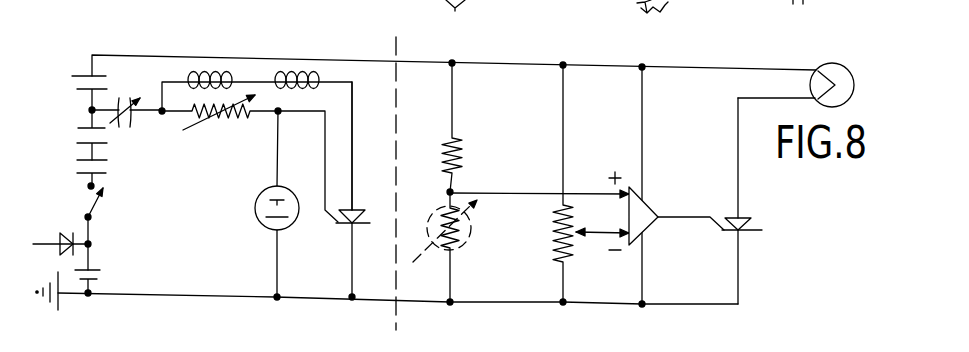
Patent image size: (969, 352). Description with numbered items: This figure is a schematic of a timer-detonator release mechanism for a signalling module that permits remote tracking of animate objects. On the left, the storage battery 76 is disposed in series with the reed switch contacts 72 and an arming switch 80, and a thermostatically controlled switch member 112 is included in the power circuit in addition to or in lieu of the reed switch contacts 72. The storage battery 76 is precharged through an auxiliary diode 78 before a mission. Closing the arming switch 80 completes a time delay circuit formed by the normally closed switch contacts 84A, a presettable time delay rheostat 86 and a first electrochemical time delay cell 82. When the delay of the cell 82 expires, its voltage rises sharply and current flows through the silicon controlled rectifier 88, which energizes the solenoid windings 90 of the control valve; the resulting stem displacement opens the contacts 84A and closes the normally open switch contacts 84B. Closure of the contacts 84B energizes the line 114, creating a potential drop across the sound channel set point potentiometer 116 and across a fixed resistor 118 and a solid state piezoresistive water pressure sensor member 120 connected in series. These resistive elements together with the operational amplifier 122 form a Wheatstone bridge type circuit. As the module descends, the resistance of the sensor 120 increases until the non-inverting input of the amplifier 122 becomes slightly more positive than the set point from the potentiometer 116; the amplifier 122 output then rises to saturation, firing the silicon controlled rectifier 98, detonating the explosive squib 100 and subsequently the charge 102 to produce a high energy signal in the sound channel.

The line 114 is at (141, 46).
The normally open switch contacts 84B is at (70, 83).
The normally closed switch contacts 84A is at (130, 130).
The reed switch contacts 72 is at (78, 129).
The thermostatically controlled switch member 112 is at (78, 160).
The arming switch 80 is at (85, 187).
The auxiliary diode 78 is at (62, 240).
The storage battery 76 is at (103, 273).
The solenoid windings 90 is at (255, 141).
The presettable time delay rheostat 86 is at (220, 127).
The first electrochemical time delay cell 82 is at (257, 196).
The silicon controlled rectifier 88 is at (338, 225).
The fixed resistor 118 is at (476, 127).
The piezoresistive water pressure sensor member 120 is at (456, 245).
The sound channel set point potentiometer 116 is at (557, 249).
The operational amplifier 122 is at (646, 192).
The silicon controlled rectifier 98 is at (760, 232).
The explosive squib 100 is at (827, 66).
The charge 102 is at (845, 68).